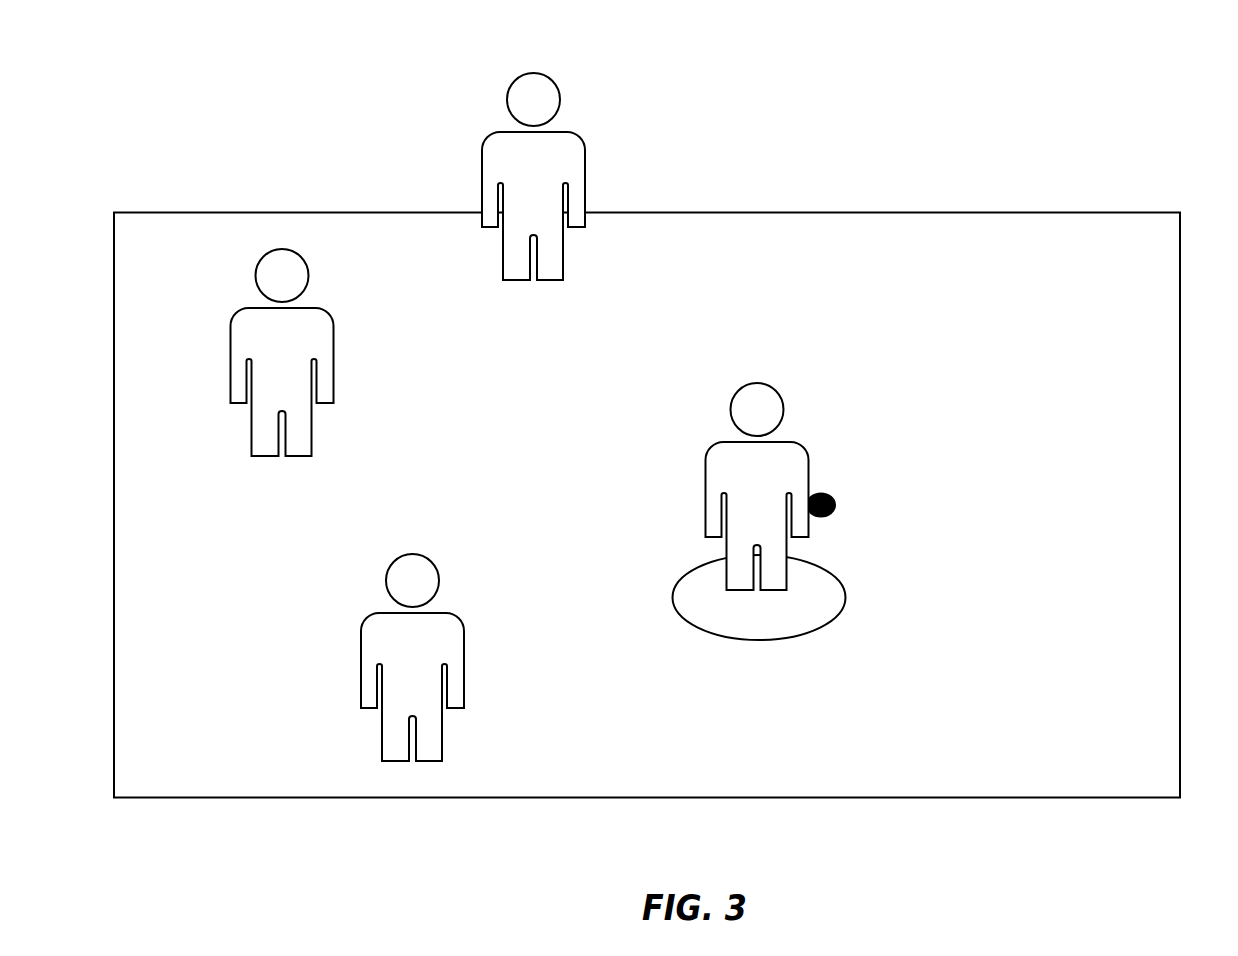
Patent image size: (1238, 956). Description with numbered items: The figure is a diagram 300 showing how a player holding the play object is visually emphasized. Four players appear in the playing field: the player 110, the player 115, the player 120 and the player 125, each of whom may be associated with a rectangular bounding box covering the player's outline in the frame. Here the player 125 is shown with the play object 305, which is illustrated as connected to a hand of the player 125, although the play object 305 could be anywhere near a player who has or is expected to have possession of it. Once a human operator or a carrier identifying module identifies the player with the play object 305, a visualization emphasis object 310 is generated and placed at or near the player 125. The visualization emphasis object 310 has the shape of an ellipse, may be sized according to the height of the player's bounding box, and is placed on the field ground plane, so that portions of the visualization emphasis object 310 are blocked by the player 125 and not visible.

The diagram 300 is at (150, 68).
The player 110 is at (587, 173).
The player 115 is at (327, 383).
The player 120 is at (467, 662).
The player 125 is at (803, 445).
The play object 305 is at (835, 510).
The visualization emphasis object 310 is at (848, 597).